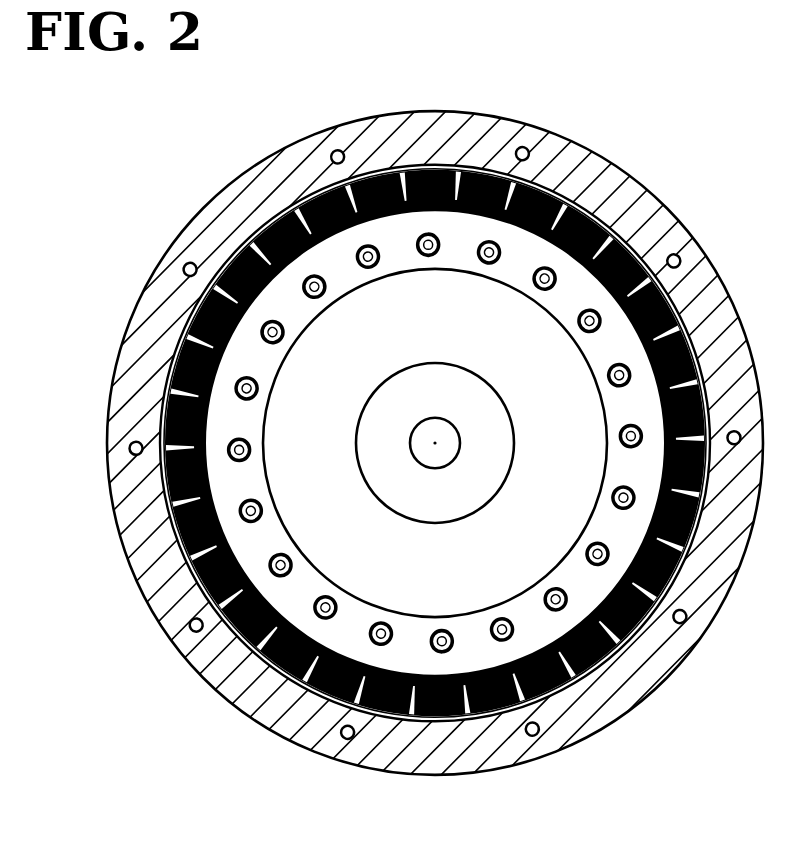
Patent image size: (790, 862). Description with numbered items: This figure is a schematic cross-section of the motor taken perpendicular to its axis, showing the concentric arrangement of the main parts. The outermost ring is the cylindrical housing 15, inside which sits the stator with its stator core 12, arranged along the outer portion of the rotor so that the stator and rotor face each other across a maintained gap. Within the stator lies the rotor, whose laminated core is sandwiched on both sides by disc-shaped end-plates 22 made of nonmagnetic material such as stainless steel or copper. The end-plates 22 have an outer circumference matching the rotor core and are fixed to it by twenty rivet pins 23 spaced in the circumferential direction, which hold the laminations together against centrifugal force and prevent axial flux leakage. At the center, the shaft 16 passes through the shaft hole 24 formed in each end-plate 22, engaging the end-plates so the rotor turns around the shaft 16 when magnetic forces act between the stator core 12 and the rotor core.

The stator core 12 is at (605, 658).
The housing 15 is at (565, 728).
The shaft 16 is at (467, 493).
The end-plate 22 is at (488, 655).
The rivet pin 23 is at (593, 553).
The shaft hole 24 is at (445, 435).